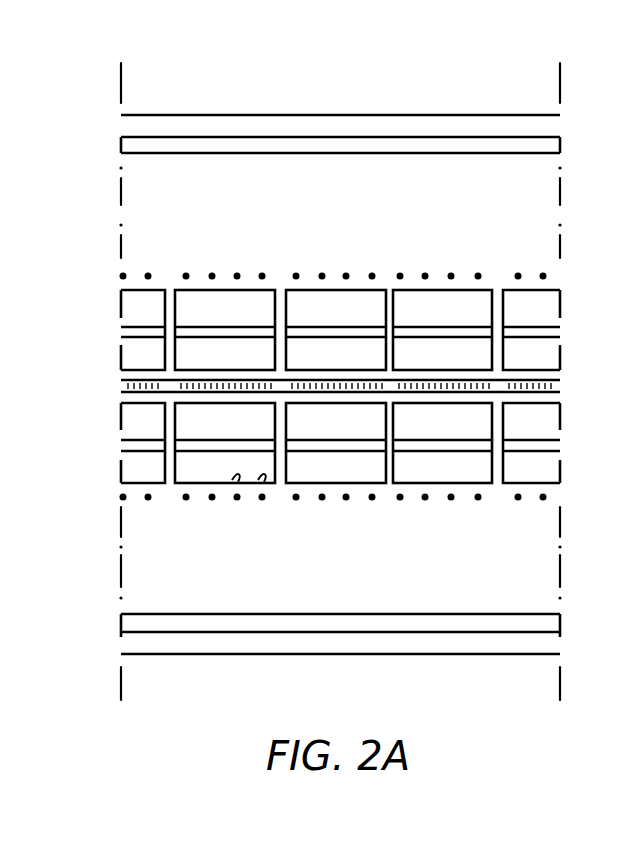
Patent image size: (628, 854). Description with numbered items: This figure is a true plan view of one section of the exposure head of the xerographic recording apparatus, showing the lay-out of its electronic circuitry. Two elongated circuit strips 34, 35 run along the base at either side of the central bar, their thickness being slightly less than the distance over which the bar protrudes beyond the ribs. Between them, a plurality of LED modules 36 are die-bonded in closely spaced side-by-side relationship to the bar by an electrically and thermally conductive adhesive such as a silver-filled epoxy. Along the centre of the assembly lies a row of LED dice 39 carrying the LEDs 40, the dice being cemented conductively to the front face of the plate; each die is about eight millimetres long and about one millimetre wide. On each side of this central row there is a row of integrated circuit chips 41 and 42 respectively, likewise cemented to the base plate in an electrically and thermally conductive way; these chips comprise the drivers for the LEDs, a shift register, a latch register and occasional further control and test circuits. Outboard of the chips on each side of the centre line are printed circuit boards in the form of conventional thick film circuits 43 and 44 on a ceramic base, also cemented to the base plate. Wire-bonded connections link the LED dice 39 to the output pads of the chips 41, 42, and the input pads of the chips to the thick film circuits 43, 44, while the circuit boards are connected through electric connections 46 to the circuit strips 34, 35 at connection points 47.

The elongated circuit strip 34 is at (443, 166).
The elongated circuit strip 35 is at (393, 598).
The LED module 36 is at (331, 284).
The LED dice 39 is at (125, 384).
The LEDs 40 is at (561, 383).
The integrated circuit chip 41 is at (135, 357).
The integrated circuit chip 42 is at (136, 418).
The thick film circuit 43 is at (134, 305).
The thick film circuit 44 is at (136, 466).
The electric connection 46 is at (263, 482).
The connection point 47 is at (123, 498).